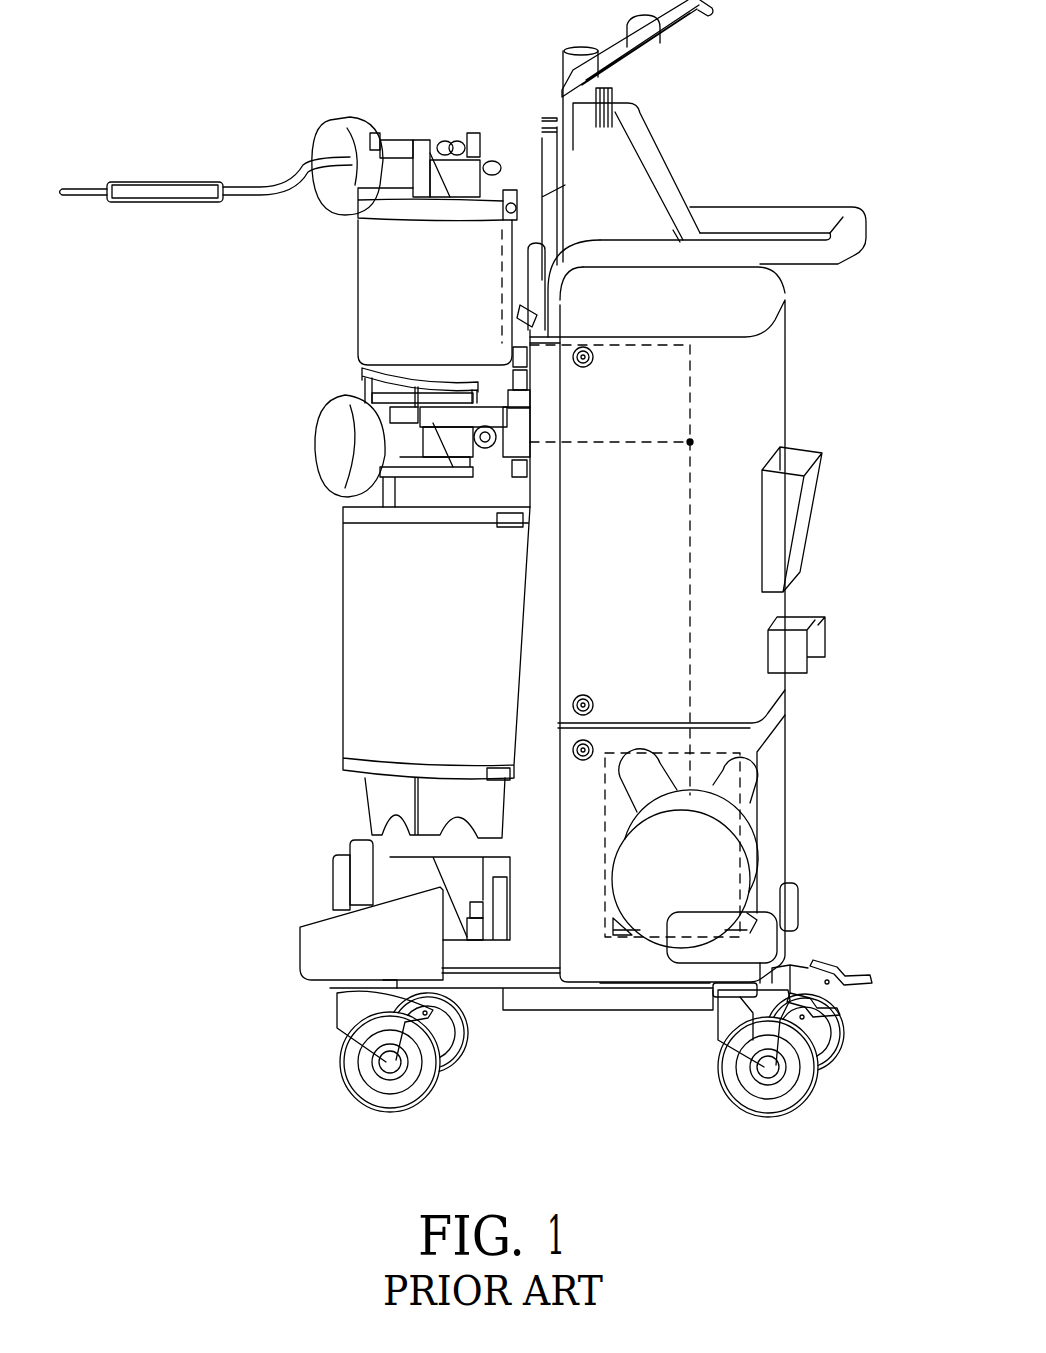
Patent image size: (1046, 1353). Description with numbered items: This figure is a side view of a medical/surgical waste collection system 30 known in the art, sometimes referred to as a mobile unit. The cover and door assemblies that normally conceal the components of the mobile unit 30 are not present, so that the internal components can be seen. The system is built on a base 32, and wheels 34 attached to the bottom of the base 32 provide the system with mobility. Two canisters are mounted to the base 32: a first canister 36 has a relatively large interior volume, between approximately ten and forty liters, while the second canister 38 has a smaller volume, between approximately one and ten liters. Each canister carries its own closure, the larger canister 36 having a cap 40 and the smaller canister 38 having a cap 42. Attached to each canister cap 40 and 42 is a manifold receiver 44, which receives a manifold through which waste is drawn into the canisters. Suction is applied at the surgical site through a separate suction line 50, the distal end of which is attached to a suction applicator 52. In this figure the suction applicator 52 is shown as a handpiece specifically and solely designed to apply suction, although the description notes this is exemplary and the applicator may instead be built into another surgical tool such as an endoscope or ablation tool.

The waste collection system 30 is at (840, 189).
The base 32 is at (773, 767).
The wheels 34 is at (470, 1047).
The canister 36 is at (438, 694).
The canister 38 is at (383, 324).
The cap 40 is at (427, 493).
The cap 42 is at (400, 203).
The manifold receiver 44 is at (390, 168).
The suction line 50 is at (260, 181).
The suction applicator 52 is at (130, 182).